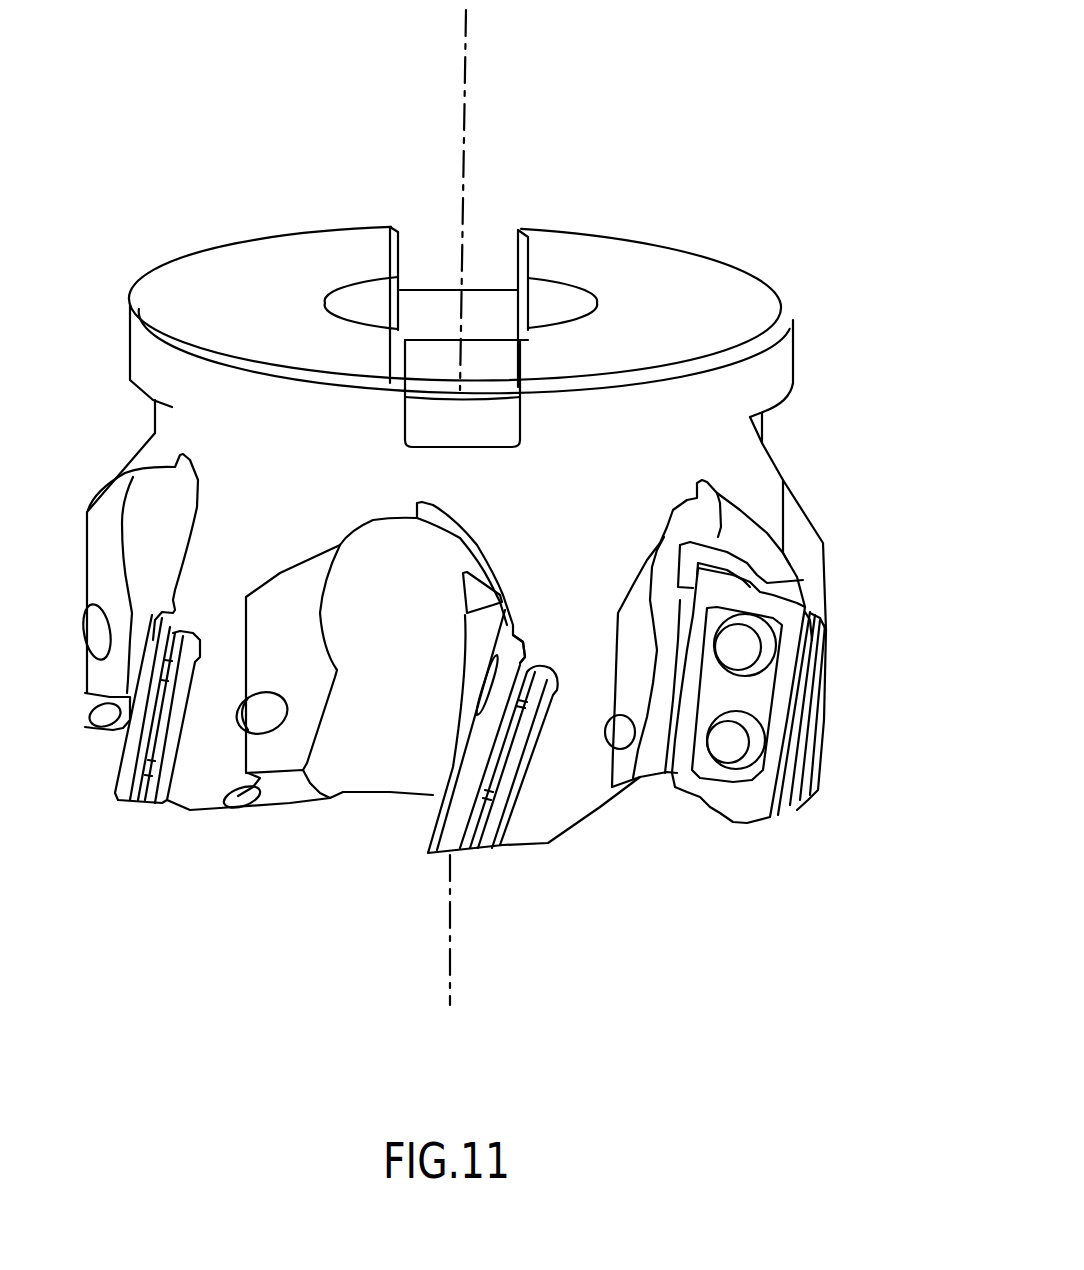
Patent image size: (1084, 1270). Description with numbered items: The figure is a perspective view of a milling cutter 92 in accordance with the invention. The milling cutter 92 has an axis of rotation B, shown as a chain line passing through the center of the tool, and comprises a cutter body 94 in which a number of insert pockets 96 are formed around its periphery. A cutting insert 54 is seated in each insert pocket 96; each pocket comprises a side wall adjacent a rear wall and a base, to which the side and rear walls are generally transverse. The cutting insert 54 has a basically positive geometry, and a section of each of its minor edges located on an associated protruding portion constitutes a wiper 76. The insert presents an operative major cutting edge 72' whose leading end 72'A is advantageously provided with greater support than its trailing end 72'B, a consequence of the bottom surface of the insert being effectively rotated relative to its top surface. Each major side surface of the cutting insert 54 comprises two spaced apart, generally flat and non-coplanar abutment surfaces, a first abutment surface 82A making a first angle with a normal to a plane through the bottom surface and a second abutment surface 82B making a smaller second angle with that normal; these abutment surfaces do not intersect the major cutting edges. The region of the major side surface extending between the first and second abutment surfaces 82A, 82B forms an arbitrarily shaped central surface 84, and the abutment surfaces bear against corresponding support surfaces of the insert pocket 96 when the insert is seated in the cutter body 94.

The axis of rotation B is at (465, 78).
The milling cutter 92 is at (693, 148).
The cutter body 94 is at (762, 478).
The insert pocket 96 is at (797, 578).
The wiper 76 is at (745, 825).
The cutting insert 54 is at (699, 805).
The operative major cutting edge 72' is at (856, 710).
The leading end of the operative major cutting edge 72'A is at (857, 706).
The trailing end of the operative major cutting edge 72'B is at (854, 703).
The first abutment surface 82A is at (513, 703).
The second abutment surface 82B is at (493, 847).
The central surface 84 is at (497, 760).